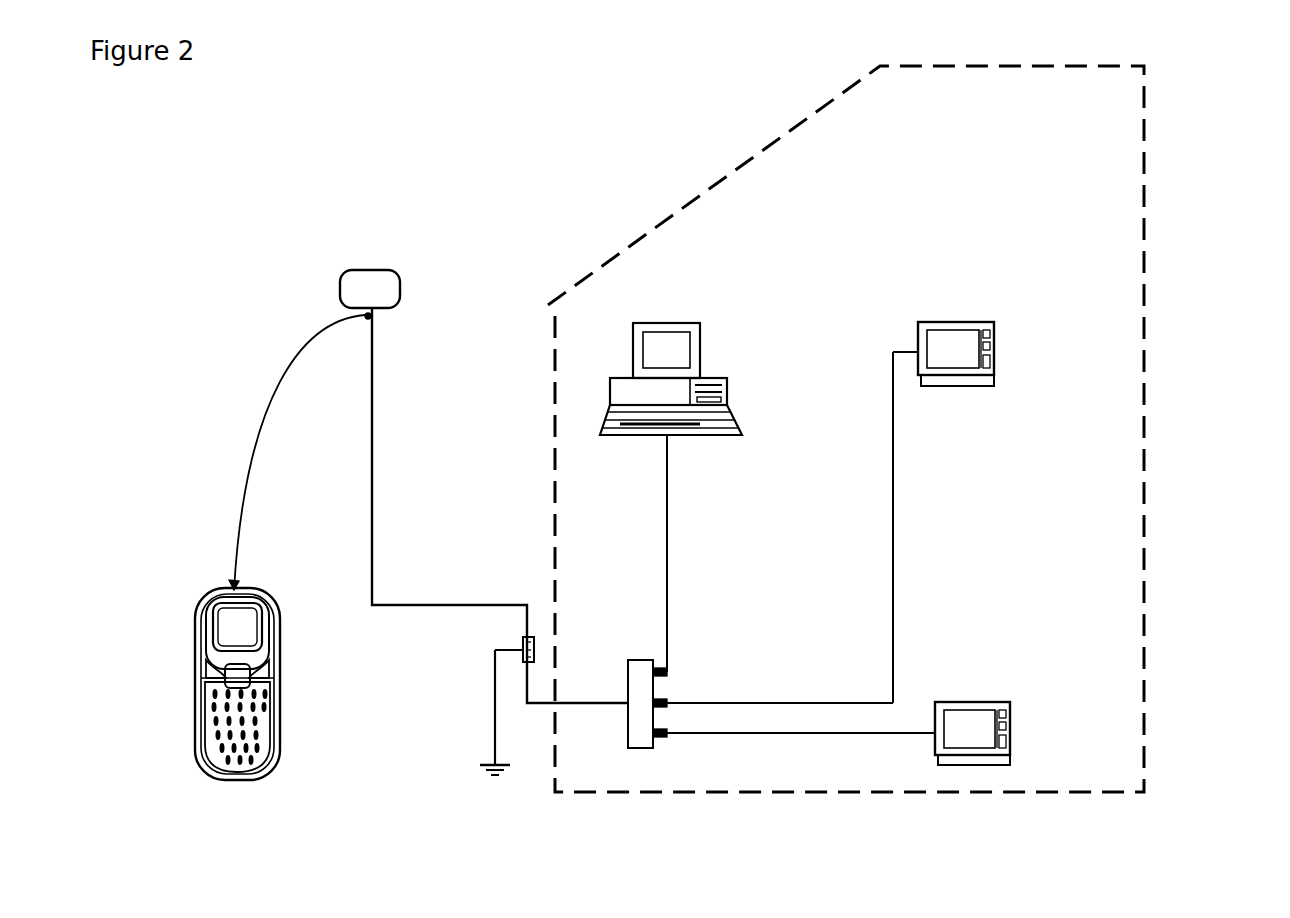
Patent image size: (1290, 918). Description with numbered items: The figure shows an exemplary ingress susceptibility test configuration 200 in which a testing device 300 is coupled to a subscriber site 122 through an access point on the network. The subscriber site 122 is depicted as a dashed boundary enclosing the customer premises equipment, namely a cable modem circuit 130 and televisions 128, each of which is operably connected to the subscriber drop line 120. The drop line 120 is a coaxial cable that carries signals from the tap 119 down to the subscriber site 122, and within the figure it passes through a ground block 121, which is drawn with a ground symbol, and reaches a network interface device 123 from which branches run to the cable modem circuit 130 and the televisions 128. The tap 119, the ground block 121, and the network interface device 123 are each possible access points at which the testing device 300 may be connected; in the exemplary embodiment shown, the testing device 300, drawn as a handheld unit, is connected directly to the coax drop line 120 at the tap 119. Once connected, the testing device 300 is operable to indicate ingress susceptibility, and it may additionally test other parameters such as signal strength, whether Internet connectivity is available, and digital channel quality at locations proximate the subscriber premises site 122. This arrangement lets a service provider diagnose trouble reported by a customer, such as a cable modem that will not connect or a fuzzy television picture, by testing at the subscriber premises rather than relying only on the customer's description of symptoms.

The tap 119 is at (369, 269).
The subscriber drop line 120 is at (372, 468).
The ground block 121 is at (523, 640).
The subscriber site 122 is at (1146, 344).
The network interface device 123 is at (633, 748).
The television 128 is at (953, 322).
The cable modem circuit 130 is at (666, 323).
The ingress susceptibility test configuration 200 is at (625, 165).
The testing device 300 is at (280, 703).